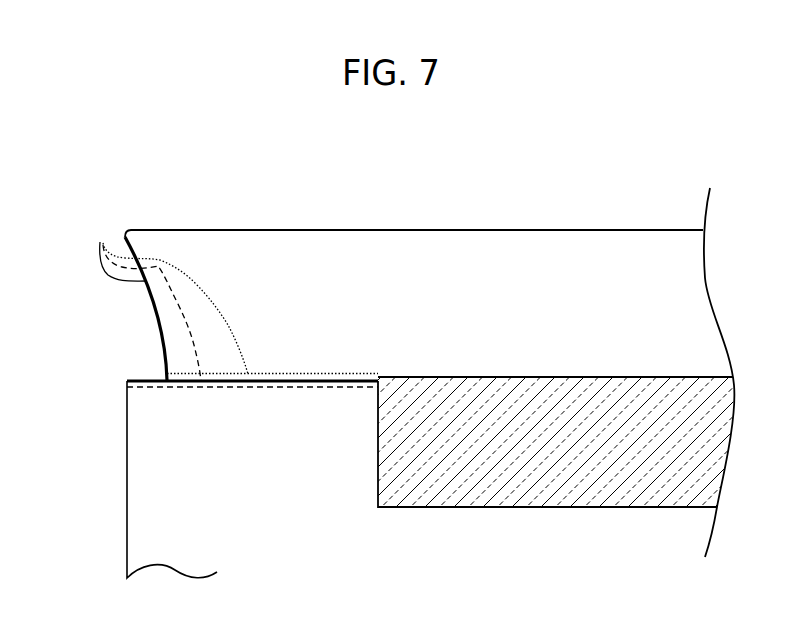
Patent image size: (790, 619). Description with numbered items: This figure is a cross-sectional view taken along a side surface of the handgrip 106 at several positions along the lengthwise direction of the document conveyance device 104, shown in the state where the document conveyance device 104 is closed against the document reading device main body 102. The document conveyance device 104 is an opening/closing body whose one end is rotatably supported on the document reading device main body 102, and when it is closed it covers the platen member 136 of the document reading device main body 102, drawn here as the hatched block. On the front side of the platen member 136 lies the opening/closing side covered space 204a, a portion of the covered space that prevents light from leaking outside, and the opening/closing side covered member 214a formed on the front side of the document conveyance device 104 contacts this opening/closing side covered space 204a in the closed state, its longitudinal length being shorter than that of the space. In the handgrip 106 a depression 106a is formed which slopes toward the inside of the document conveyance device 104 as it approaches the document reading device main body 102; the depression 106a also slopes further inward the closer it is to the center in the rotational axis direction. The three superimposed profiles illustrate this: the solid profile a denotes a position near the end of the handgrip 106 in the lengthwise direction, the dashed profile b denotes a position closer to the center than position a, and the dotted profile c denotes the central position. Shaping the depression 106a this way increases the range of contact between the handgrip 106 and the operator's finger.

The document conveyance device 104 is at (590, 238).
The handgrip 106 is at (110, 327).
The depression 106a is at (100, 242).
The document reading device main body 102 is at (140, 490).
The platen member 136 is at (577, 504).
The opening/closing side covered member 214a is at (327, 371).
The opening/closing side covered space 204a is at (300, 389).
The position near the end of the handgrip a is at (168, 363).
The position closer to the center b is at (196, 331).
The central position c is at (216, 296).